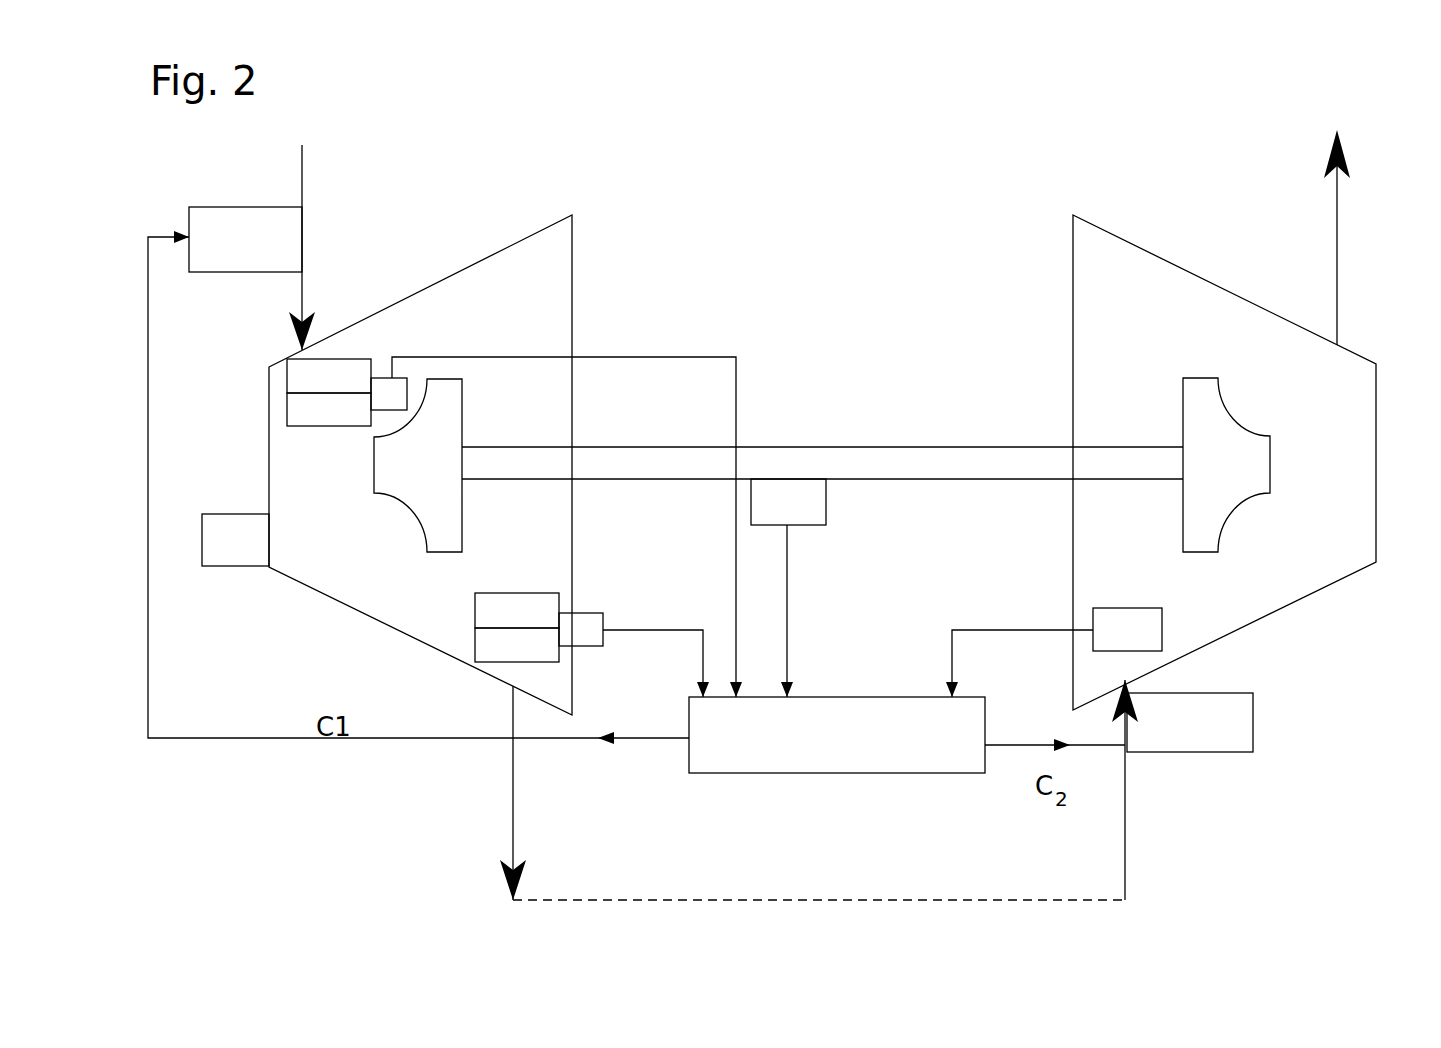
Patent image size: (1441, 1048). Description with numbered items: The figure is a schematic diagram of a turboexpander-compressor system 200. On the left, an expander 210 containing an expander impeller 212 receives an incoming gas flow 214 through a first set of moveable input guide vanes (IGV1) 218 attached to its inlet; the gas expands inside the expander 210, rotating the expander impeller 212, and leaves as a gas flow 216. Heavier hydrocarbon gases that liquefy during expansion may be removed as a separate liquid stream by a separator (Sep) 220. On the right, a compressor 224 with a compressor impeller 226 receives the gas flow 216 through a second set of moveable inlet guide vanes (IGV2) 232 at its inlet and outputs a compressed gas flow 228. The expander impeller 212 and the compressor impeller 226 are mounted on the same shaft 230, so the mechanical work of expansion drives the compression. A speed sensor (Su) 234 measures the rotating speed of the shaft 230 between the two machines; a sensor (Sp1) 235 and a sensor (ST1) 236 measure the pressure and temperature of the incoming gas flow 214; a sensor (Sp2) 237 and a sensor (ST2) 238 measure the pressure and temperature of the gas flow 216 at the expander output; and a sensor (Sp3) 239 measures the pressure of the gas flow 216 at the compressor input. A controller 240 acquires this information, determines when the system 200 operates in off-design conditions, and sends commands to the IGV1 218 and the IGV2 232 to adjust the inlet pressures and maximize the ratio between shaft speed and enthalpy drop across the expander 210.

The turboexpander-compressor system 200 is at (852, 129).
The expander 210 is at (572, 252).
The expander impeller 212 is at (405, 508).
The incoming gas flow 214 is at (305, 230).
The gas flow 216 is at (513, 797).
The first set of moveable input guide vanes (IGV1) 218 is at (254, 207).
The separator (Sep) 220 is at (202, 514).
The compressor 224 is at (1073, 248).
The compressor impeller 226 is at (1237, 512).
The compressed gas flow 228 is at (1343, 222).
The shaft 230 is at (870, 447).
The second set of moveable inlet guide vanes (IGV2) 232 is at (1253, 728).
The speed sensor (Su) 234 is at (826, 503).
The sensor (Sp1) 235 is at (373, 359).
The sensor (ST1) 236 is at (287, 424).
The sensor (Sp2) 237 is at (555, 662).
The sensor (ST2) 238 is at (540, 593).
The sensor (Sp3) 239 is at (1162, 630).
The controller 240 is at (830, 697).